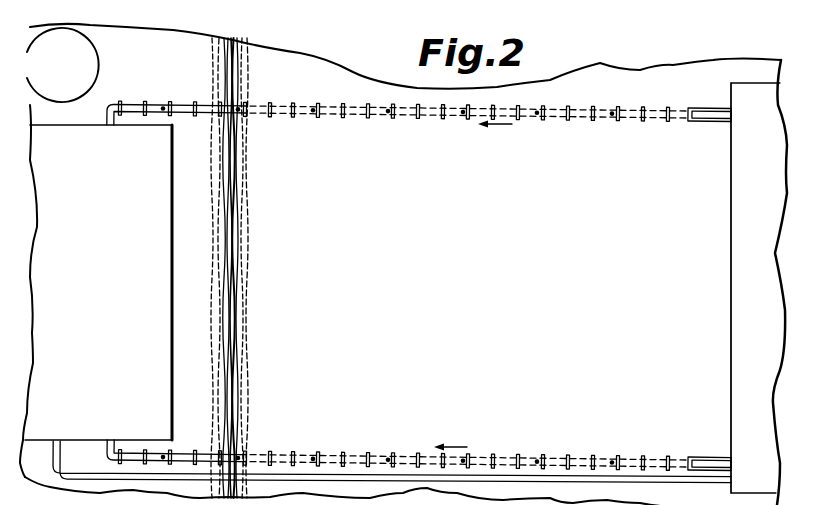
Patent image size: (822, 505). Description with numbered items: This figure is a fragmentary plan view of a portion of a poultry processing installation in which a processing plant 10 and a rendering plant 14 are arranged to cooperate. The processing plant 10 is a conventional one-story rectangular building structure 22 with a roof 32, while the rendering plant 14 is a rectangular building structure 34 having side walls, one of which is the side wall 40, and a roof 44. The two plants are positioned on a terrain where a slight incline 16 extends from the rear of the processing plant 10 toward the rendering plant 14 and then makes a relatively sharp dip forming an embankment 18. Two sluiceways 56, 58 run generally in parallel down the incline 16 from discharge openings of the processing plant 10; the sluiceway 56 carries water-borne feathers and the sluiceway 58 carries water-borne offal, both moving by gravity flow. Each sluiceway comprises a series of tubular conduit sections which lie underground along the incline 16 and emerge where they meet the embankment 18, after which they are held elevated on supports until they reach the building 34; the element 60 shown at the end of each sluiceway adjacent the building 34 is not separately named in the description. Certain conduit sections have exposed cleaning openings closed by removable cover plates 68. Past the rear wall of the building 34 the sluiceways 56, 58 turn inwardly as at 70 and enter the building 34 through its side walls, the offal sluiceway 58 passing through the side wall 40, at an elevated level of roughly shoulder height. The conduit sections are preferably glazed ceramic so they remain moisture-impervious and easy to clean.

The poultry processing and packing plant 10 is at (716, 252).
The rendering plant 14 is at (237, 268).
The incline 16 is at (545, 266).
The embankment 18 is at (226, 305).
The building structure 22 is at (721, 288).
The roof 32 is at (737, 230).
The building structure 34 is at (115, 282).
The side wall 40 is at (86, 68).
The roof 44 is at (157, 207).
The sluiceway 56 is at (338, 446).
The sluiceway 58 is at (407, 122).
The manifold 60 is at (704, 120).
The removable cover plate 68 is at (462, 112).
The inward turn 70 is at (105, 116).